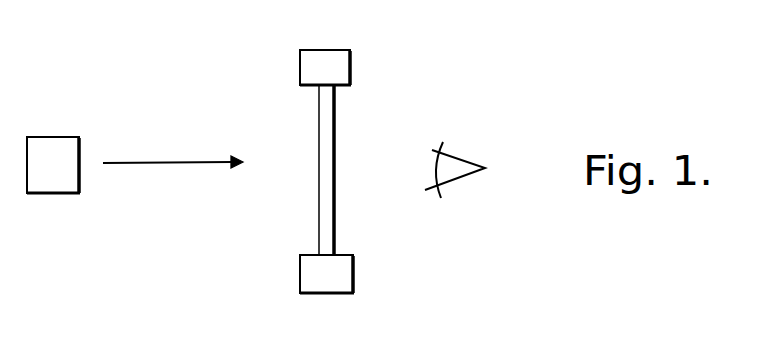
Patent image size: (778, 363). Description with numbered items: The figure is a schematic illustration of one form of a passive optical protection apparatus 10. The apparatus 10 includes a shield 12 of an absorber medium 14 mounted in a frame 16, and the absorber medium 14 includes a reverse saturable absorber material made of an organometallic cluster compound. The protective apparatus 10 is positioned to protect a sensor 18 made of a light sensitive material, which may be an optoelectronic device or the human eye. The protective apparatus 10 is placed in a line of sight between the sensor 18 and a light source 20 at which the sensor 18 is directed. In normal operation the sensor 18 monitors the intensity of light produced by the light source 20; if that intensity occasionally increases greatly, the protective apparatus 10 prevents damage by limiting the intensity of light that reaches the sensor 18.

The passive optical protection apparatus 10 is at (270, 68).
The shield 12 is at (340, 239).
The absorber medium 14 is at (333, 131).
The frame 16 is at (346, 50).
The sensor 18 is at (468, 152).
The light source 20 is at (80, 194).